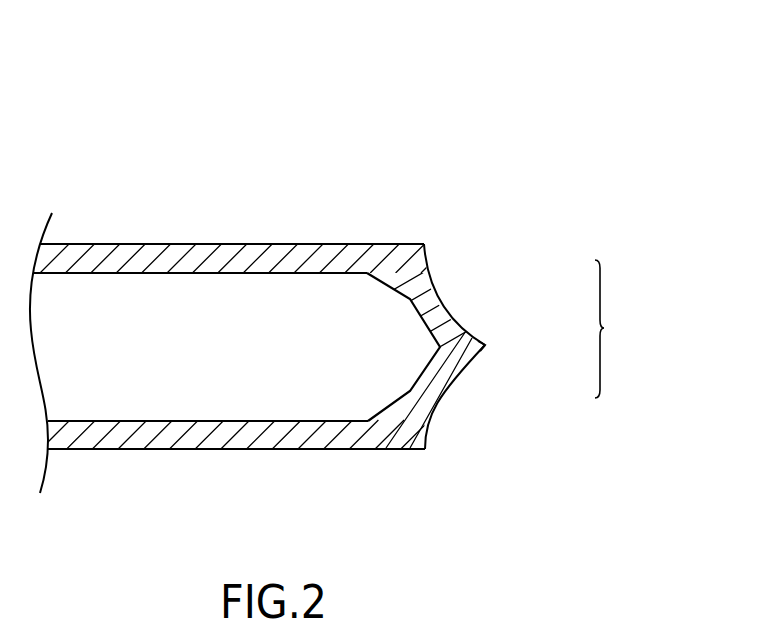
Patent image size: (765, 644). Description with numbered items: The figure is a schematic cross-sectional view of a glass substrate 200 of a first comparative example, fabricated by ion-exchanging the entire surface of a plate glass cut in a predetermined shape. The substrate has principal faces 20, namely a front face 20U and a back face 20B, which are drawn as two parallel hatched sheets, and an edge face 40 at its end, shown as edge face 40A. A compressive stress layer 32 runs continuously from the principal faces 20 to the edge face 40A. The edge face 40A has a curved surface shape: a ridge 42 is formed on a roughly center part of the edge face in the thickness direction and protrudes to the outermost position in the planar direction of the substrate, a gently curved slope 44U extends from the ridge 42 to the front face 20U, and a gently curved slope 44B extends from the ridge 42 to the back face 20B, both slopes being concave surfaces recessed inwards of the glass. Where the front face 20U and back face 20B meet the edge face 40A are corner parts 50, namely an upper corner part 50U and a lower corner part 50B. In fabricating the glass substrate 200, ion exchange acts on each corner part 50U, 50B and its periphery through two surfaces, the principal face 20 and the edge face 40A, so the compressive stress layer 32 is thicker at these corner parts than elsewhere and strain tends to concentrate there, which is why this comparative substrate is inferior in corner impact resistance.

The glass substrate 200 is at (502, 125).
The principal faces 20 is at (244, 349).
The front face 20U is at (270, 242).
The back face 20B is at (265, 456).
The compressive stress layer 32 is at (143, 244).
The corner part 50 is at (473, 349).
The upper corner part 50U is at (426, 243).
The lower corner part 50B is at (425, 450).
The edge face 40 is at (524, 340).
The edge face 40A is at (532, 340).
The slope 44U is at (453, 305).
The ridge 42 is at (487, 345).
The slope 44B is at (453, 388).